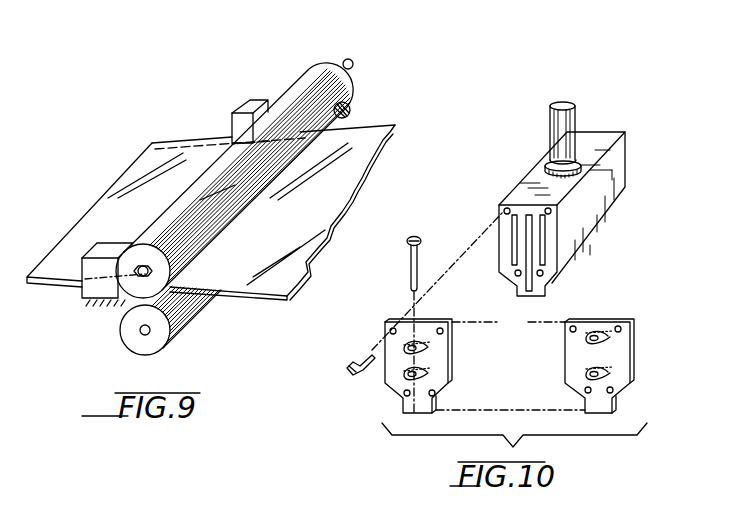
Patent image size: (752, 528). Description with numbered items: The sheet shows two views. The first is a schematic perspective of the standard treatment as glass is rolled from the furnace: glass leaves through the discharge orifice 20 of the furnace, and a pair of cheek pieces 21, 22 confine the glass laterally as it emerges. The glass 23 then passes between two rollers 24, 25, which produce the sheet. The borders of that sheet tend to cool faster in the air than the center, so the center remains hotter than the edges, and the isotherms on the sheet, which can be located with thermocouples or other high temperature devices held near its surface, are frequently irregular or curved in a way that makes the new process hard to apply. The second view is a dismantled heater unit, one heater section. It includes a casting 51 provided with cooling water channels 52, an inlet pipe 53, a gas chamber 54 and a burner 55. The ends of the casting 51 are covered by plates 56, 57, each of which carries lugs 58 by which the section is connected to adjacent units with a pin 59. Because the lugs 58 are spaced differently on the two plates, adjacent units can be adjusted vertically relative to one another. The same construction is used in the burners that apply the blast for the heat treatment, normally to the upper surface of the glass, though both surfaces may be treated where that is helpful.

In FIG. 9, the discharge orifice 20 is at (202, 160).
In FIG. 9, the cheek piece 21 is at (86, 289).
In FIG. 9, the cheek piece 22 is at (240, 110).
In FIG. 9, the glass 23 is at (260, 290).
In FIG. 9, the roller 24 is at (325, 58).
In FIG. 9, the roller 25 is at (125, 335).
In FIG. 10, the casting 51 is at (518, 195).
In FIG. 10, the cooling water channels 52 is at (515, 243).
In FIG. 10, the inlet pipe 53 is at (553, 128).
In FIG. 10, the gas chamber 54 is at (530, 255).
In FIG. 10, the burner 55 is at (528, 296).
In FIG. 10, the plate 56 is at (434, 320).
In FIG. 10, the plate 57 is at (620, 340).
In FIG. 10, the lug 58 is at (432, 350).
In FIG. 10, the pin 59 is at (409, 238).